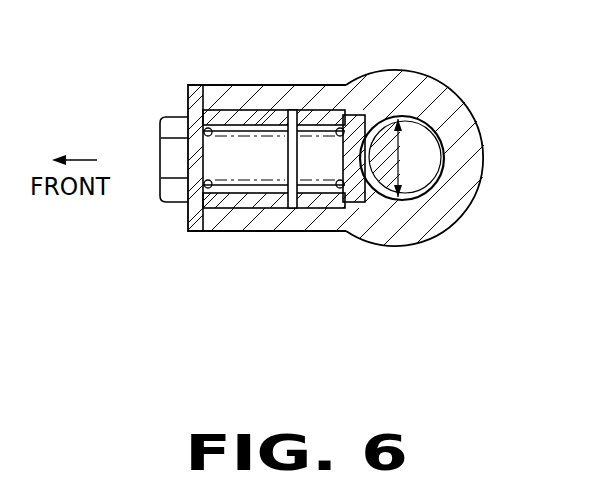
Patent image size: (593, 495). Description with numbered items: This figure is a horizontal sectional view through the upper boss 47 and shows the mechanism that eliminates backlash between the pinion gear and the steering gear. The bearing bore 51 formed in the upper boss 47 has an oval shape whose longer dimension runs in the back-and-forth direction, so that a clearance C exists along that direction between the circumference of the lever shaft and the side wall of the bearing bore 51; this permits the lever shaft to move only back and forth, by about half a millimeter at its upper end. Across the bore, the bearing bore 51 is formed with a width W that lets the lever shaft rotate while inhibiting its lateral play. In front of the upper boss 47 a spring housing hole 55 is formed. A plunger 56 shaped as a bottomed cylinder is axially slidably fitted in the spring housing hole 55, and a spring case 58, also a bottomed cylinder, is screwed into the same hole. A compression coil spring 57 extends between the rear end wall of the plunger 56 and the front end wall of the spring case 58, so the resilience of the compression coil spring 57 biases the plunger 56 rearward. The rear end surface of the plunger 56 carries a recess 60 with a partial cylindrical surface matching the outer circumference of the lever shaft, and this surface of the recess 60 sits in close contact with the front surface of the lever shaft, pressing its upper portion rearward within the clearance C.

The upper boss 47 is at (457, 88).
The bearing bore 51 is at (425, 193).
The spring housing hole 55 is at (278, 208).
The plunger 56 is at (307, 116).
The compression coil spring 57 is at (243, 183).
The spring case 58 is at (216, 112).
The recess 60 is at (386, 196).
The clearance C is at (385, 120).
The width W is at (411, 158).